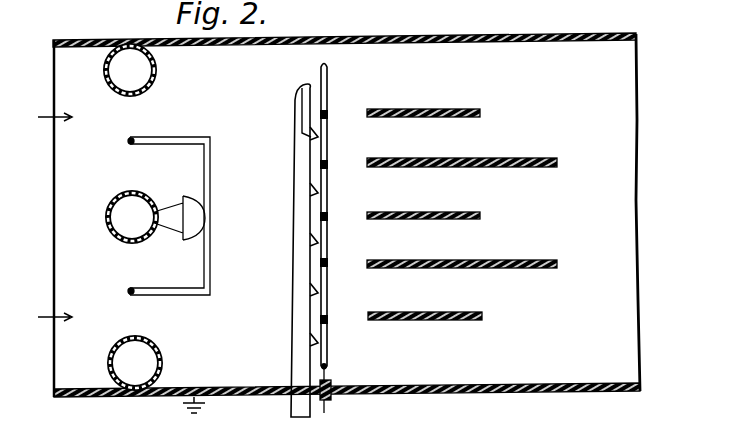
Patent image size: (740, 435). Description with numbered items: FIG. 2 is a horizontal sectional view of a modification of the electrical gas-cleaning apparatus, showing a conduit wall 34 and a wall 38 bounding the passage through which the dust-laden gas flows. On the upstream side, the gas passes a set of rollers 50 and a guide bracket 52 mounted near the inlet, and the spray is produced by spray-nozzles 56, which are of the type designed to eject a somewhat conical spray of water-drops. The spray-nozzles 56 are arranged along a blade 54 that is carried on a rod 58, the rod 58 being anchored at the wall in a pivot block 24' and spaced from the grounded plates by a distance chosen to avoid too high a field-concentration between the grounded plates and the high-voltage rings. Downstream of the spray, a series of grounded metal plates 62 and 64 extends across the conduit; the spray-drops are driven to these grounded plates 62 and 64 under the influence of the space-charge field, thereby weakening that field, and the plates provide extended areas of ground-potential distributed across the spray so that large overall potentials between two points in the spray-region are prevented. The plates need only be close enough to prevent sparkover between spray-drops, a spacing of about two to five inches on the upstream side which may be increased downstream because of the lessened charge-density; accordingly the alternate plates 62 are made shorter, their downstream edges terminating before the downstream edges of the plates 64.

The rollers 50 is at (157, 72).
The guide bracket 52 is at (128, 141).
The blade 54 is at (293, 403).
The spray-nozzle 56 is at (313, 137).
The rod with stops 58 is at (330, 113).
The pivot block 24' is at (343, 398).
The metal plate 62 is at (445, 109).
The metal plate 64 is at (531, 158).
The housing 34 is at (502, 0).
The wall 38 is at (606, 0).